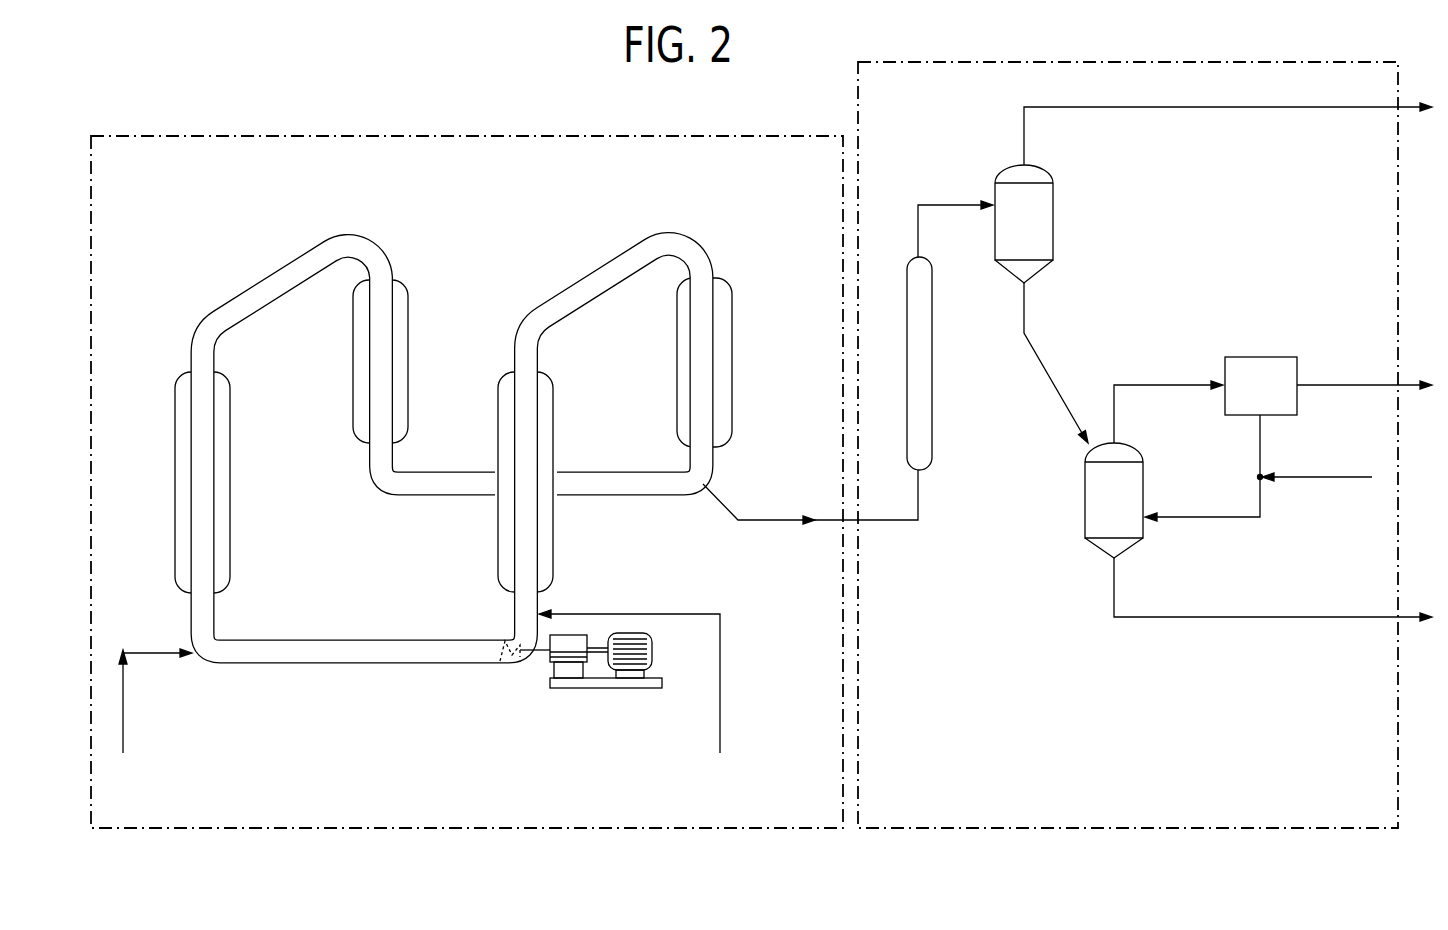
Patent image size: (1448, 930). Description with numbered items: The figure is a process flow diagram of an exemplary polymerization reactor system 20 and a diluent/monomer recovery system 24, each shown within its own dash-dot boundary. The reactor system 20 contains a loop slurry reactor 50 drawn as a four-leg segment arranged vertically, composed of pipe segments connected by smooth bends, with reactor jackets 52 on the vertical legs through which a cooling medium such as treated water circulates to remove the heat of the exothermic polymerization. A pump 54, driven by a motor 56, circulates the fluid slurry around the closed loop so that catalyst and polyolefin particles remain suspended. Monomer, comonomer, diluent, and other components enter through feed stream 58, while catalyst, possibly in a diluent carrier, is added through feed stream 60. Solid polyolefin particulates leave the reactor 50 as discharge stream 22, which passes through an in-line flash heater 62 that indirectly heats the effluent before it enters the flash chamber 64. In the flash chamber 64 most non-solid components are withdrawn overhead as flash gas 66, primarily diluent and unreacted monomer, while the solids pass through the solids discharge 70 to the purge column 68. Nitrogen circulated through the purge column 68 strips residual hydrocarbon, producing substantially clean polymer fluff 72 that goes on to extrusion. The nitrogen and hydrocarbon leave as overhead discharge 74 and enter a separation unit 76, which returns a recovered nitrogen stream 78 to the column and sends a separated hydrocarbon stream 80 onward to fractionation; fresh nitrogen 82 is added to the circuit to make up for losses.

The polymerization reactor system 20 is at (297, 135).
The discharge stream 22 is at (722, 505).
The diluent/monomer recovery system 24 is at (1113, 62).
The loop slurry reactor 50 is at (592, 268).
The reactor jackets 52 is at (175, 490).
The pump 54 is at (548, 665).
The motor 56 is at (651, 661).
The feed stream 58 is at (721, 690).
The feed stream 60 is at (124, 706).
The in-line flash heater 62 is at (907, 346).
The flash chamber 64 is at (1055, 225).
The flash gas 66 is at (1225, 108).
The purge column 68 is at (1087, 508).
The solids discharge 70 is at (1024, 307).
The polymer fluff 72 is at (1235, 616).
The overhead discharge 74 is at (1170, 383).
The separation unit 76 is at (1258, 357).
The nitrogen stream 78 is at (1258, 440).
The hydrocarbon stream 80 is at (1352, 385).
The fresh nitrogen 82 is at (1328, 478).